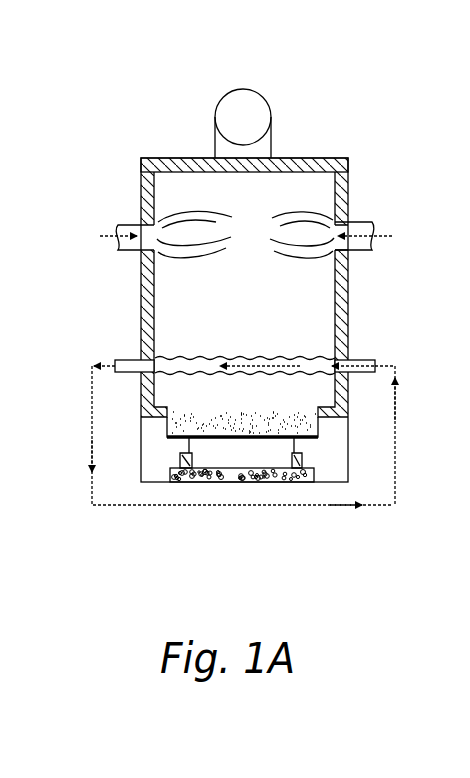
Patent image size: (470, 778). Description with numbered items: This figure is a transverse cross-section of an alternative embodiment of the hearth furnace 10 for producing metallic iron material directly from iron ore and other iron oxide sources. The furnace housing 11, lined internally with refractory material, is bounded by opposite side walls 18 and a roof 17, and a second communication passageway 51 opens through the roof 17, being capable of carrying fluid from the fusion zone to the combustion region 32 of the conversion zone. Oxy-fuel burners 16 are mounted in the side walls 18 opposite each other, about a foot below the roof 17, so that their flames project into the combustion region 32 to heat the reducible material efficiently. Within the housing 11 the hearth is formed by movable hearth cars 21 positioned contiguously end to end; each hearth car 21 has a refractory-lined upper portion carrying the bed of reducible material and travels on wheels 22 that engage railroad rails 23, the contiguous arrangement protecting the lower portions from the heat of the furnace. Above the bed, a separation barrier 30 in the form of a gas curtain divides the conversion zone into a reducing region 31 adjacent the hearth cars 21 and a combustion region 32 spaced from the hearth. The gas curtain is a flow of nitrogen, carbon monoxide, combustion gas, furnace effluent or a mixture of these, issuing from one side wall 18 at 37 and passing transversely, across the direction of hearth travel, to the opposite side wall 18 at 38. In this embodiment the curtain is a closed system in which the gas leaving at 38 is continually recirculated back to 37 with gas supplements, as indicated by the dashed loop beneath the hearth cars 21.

The hearth furnace 10 is at (336, 157).
The furnace housing 11 is at (350, 178).
The oxy-fuel burners 16 is at (128, 225).
The roof 17 is at (297, 157).
The side wall 18 is at (140, 298).
The hearth cars 21 is at (165, 431).
The wheels 22 is at (195, 451).
The railroad rails 23 is at (186, 471).
The separation barrier 30 is at (245, 357).
The reducing region 31 is at (251, 402).
The combustion region 32 is at (256, 285).
The gas curtain inlet location in side wall 37 is at (365, 360).
The gas curtain outlet location in opposite side wall 38 is at (125, 360).
The second communication passageway 51 is at (247, 97).